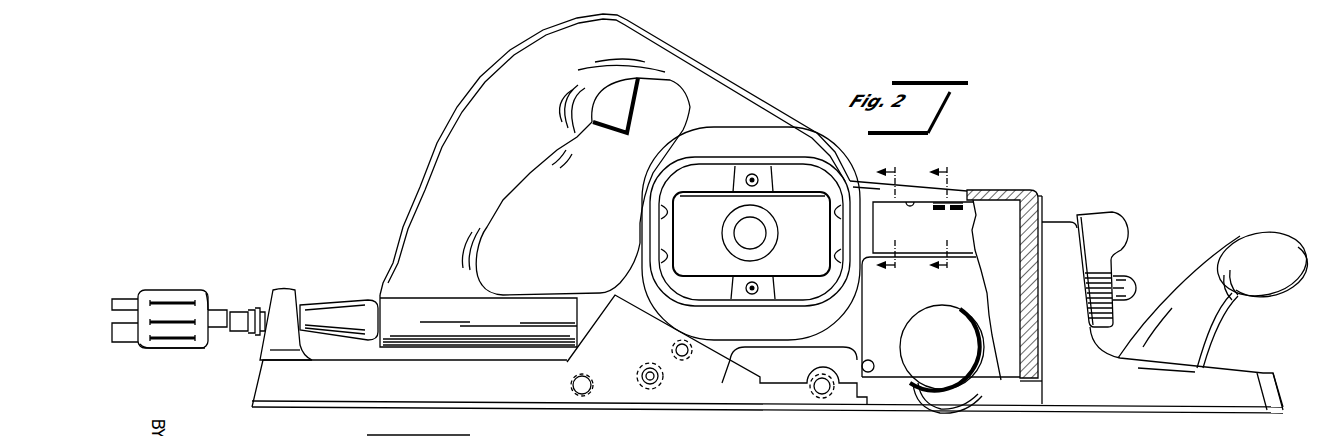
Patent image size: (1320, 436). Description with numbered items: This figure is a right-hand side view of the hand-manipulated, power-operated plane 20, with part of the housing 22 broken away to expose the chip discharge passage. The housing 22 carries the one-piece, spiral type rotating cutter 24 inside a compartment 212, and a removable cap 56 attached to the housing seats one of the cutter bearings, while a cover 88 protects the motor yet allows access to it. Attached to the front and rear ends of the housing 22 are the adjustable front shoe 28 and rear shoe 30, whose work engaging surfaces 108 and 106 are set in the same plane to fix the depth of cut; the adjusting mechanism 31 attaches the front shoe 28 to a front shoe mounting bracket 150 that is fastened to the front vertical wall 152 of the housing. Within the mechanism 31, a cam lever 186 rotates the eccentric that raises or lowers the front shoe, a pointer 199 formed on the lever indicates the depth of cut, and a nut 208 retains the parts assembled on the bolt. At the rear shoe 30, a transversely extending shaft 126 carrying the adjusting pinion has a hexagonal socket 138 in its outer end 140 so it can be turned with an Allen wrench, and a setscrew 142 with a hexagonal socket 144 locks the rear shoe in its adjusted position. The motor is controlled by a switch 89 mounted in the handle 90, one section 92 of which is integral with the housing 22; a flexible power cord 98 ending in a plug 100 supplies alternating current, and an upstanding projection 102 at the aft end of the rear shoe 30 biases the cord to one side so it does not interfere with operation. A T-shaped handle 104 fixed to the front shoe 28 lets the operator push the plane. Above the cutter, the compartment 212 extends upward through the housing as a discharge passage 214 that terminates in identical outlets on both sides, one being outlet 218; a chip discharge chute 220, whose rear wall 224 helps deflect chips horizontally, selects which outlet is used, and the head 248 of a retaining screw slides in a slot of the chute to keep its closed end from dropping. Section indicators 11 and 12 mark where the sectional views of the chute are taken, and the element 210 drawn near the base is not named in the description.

The plane 20 is at (840, 88).
The housing 22 is at (789, 158).
The cutter 24 is at (953, 408).
The front shoe 28 is at (1115, 398).
The rear shoe 30 is at (535, 392).
The adjusting mechanism 31 is at (1133, 253).
The removable cap 56 is at (911, 377).
The cover 88 is at (680, 228).
The switch 89 is at (622, 108).
The handle 90 is at (441, 180).
The handle section 92 is at (450, 116).
The power cord 98 is at (346, 298).
The plug 100 is at (176, 289).
The upstanding integral projection 102 is at (281, 289).
The T-shaped handle 104 is at (1276, 242).
The work engaging surface 106 is at (490, 410).
The work engaging surface 108 is at (1211, 414).
The shaft 126 is at (645, 368).
The hexagonal socket 138 is at (660, 379).
The outer end 140 is at (638, 375).
The setscrew 142 is at (675, 346).
The hexagonal socket 144 is at (688, 356).
The front shoe mounting bracket 150 is at (1035, 383).
The front vertical wall 152 is at (1043, 212).
The handle 186 is at (1113, 216).
The pointer 199 is at (1076, 236).
The nut 208 is at (1139, 285).
The base 210 is at (402, 432).
The compartment 212 is at (900, 298).
The discharge passage 214 is at (1037, 189).
The outlet 218 is at (912, 200).
The chip discharge chute 220 is at (866, 221).
The rear wall 224 is at (872, 238).
The head 248 is at (932, 220).
The section line 11- 11 is at (895, 219).
The section line 12- 12 is at (948, 219).